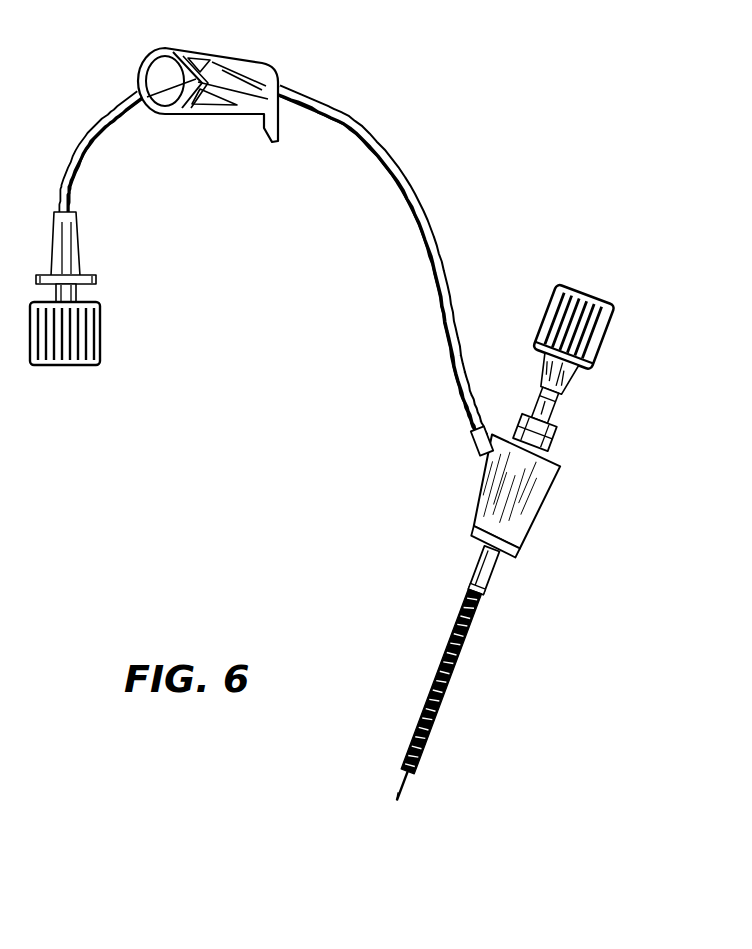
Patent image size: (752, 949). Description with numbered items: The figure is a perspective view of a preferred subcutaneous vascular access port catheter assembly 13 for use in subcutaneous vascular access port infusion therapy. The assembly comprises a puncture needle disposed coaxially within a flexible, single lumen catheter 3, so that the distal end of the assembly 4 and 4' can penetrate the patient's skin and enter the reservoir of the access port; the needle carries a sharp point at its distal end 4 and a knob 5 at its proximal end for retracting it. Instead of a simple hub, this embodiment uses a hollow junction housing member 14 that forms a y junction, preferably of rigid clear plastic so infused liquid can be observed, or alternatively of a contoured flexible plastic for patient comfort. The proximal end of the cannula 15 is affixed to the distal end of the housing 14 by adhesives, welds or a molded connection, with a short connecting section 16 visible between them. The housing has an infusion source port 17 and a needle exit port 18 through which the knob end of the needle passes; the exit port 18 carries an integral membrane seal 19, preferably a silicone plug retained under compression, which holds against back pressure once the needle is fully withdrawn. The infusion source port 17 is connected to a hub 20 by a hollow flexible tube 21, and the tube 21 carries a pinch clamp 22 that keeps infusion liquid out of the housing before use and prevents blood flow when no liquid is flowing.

The catheter 3 is at (460, 658).
The distal end 4 is at (433, 818).
The distal end of the assembly 4' is at (446, 788).
The knob 5 is at (604, 300).
The subcutaneous vascular access port catheter assembly 13 is at (244, 393).
The junction housing member 14 is at (527, 510).
The proximal end of the cannula 15 is at (480, 596).
The connecting tube 16 is at (498, 563).
The infusion source port 17 is at (477, 448).
The needle exit port 18 is at (553, 440).
The membrane seal 19 is at (552, 432).
The hub 20 is at (80, 260).
The hollow flexible tube 21 is at (328, 118).
The pinch clamp 22 is at (150, 57).